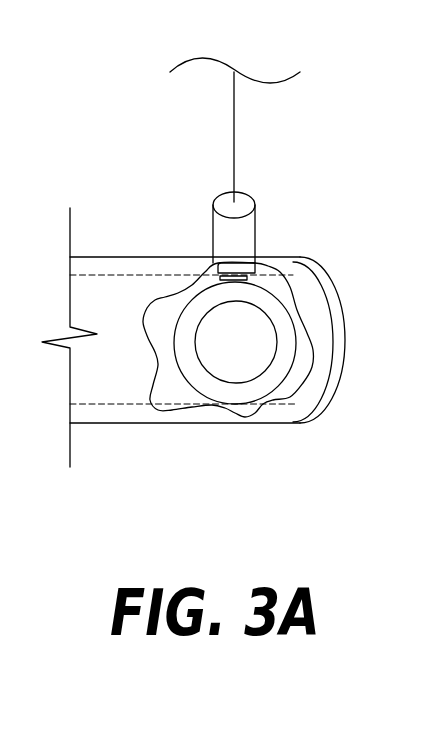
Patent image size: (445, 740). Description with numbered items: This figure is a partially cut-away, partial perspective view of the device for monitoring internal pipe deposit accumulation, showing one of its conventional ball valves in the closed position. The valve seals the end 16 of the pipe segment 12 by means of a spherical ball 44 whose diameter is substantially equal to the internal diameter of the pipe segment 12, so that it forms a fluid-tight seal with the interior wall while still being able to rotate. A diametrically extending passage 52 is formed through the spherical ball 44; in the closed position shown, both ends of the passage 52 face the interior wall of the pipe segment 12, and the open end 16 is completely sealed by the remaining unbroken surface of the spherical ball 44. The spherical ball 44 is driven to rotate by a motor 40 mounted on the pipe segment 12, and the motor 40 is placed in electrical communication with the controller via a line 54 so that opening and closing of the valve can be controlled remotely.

The pipe segment 12 is at (123, 423).
The end of pipe segment 16 is at (310, 288).
The motor 40 is at (257, 220).
The spherical ball 44 is at (287, 342).
The diametrically extending passage 52 is at (215, 361).
The line 54 is at (237, 112).